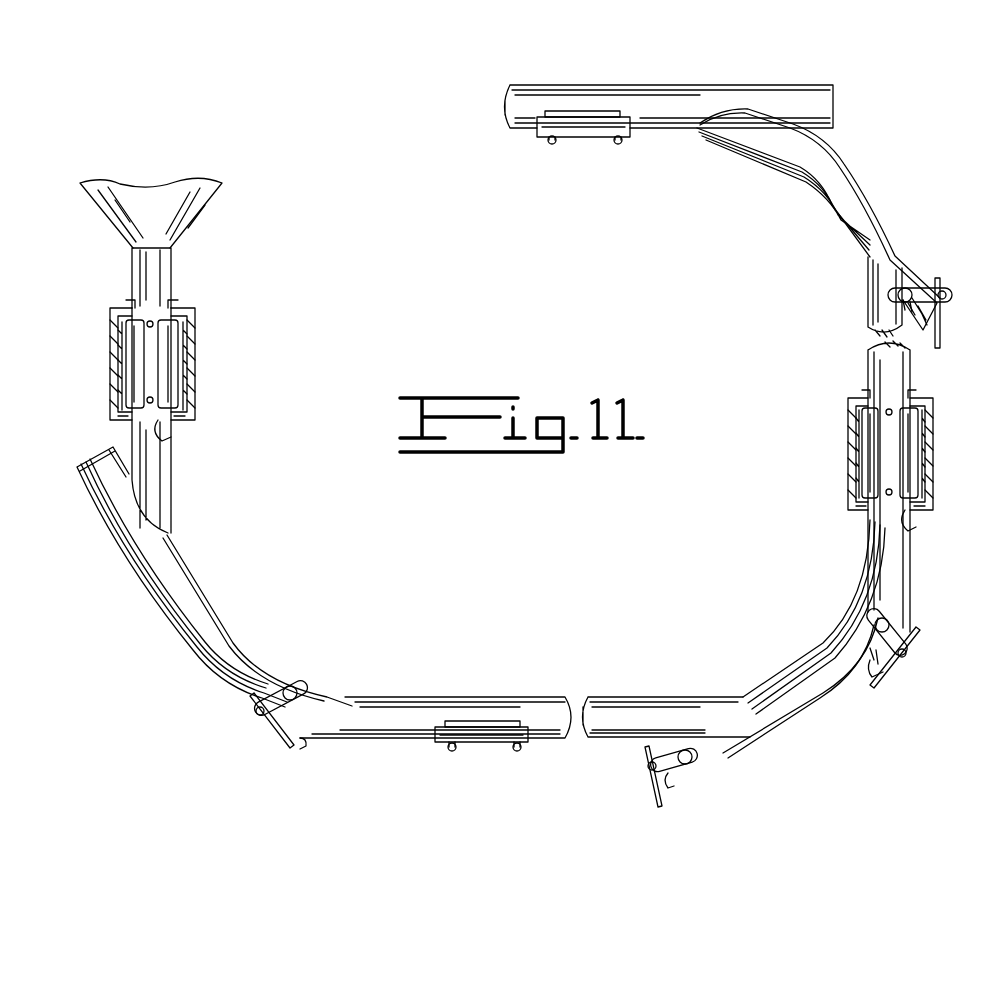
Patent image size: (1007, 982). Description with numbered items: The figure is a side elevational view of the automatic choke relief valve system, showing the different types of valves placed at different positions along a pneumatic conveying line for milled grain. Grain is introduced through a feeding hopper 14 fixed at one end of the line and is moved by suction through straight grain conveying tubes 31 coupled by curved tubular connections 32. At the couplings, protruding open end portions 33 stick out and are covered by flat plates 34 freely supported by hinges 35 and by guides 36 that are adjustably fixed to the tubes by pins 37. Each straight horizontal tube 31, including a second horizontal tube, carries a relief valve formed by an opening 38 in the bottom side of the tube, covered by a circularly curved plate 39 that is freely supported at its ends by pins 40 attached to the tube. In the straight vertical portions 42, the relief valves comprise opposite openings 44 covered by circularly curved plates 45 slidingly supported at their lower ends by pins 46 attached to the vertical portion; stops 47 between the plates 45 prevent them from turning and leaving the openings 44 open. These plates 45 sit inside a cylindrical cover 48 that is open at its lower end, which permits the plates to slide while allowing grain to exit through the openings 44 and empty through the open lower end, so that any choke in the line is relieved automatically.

The feeding hopper 14 is at (193, 219).
The straight vertical portion 42 is at (160, 263).
The straight grain conveying tube 31 is at (152, 485).
The curved tubular connection 32 is at (170, 565).
The protruding open end portion 33 is at (298, 744).
The flat plate 34 is at (270, 726).
The hinge 35 is at (252, 709).
The guide 36 is at (300, 692).
The pin 37 is at (289, 686).
The opening 38 is at (462, 721).
The circularly curved plate 39 is at (488, 742).
The pin 40 is at (448, 750).
The opposite opening 44 is at (142, 363).
The circularly curved plate 45 is at (128, 338).
The pin 46 is at (173, 425).
The stop 47 is at (153, 322).
The cylindrical cover 48 is at (108, 387).